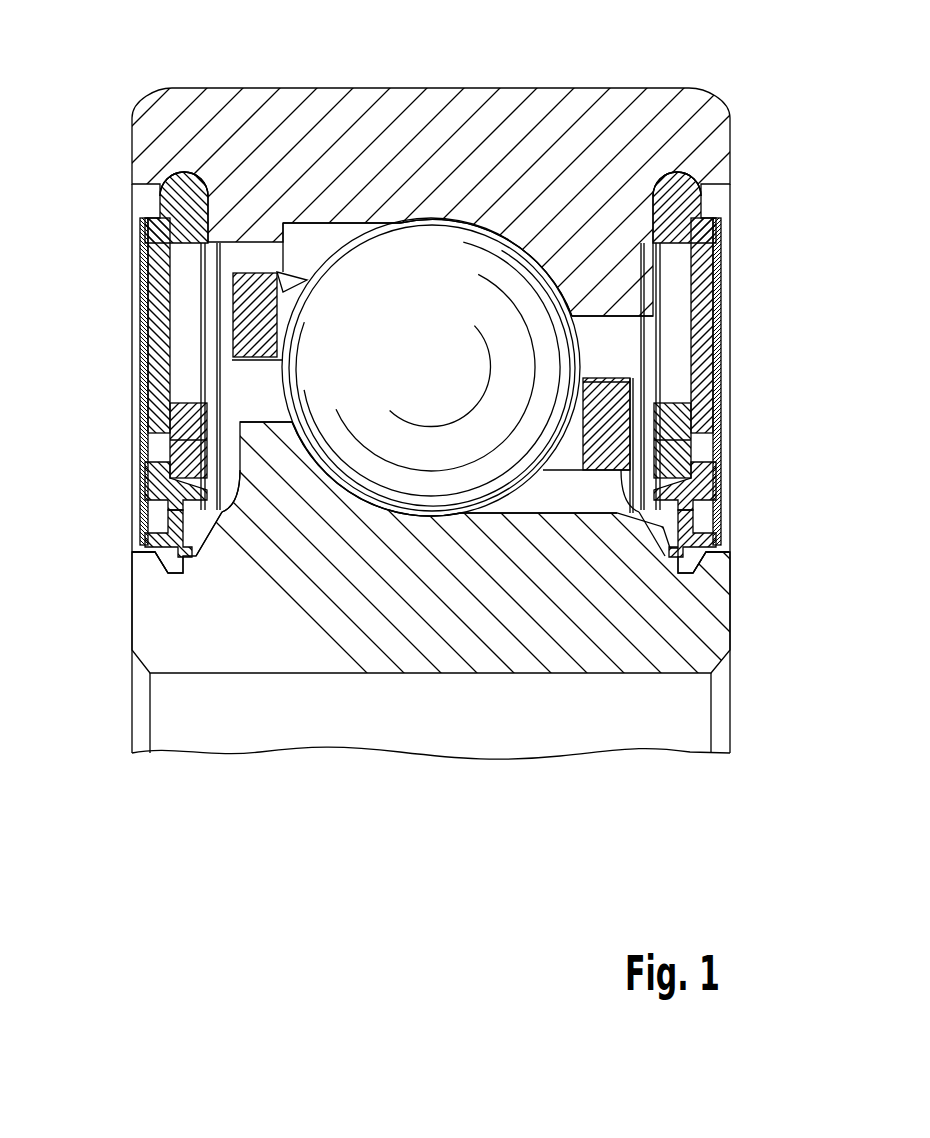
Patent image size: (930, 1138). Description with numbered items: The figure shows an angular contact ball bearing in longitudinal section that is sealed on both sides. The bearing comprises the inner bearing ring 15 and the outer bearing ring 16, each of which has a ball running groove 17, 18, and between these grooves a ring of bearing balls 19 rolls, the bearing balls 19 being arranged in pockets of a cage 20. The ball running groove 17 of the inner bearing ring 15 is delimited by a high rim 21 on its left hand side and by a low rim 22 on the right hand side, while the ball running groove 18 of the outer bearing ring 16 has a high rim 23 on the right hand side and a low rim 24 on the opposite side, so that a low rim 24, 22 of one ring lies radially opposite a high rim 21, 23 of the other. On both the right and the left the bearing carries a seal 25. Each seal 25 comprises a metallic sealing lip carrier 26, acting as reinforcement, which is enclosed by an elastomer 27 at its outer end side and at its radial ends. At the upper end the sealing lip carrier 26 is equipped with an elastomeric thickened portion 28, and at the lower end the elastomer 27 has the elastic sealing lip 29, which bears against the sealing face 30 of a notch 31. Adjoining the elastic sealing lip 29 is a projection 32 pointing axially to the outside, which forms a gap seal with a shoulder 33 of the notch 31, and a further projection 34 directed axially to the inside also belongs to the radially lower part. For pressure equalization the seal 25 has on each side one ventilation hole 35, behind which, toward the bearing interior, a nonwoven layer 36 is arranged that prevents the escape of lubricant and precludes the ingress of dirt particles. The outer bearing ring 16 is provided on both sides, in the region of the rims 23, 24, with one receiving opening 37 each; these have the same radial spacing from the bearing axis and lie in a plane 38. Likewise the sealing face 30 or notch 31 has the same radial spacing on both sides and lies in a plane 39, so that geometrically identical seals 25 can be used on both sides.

The inner bearing ring 15 is at (449, 655).
The outer bearing ring 16 is at (443, 108).
The ball running groove 17 is at (360, 512).
The ball running groove 18 is at (490, 228).
The bearing balls 19 is at (451, 378).
The cage 20 is at (607, 388).
The high rim 21 is at (288, 445).
The low rim 22 is at (532, 522).
The high rim 23 is at (598, 275).
The low rim 24 is at (372, 212).
The seal 25 is at (465, 366).
The sealing lip carrier 26 is at (146, 295).
The elastomer 27 is at (152, 260).
The elastomeric thickened portion 28 is at (155, 186).
The elastic sealing lip 29 is at (178, 602).
The sealing face 30 is at (433, 655).
The notch 31 is at (180, 572).
The projection 32 is at (165, 540).
The shoulder 33 is at (172, 562).
The projection 34 is at (150, 492).
The ventilation hole 35 is at (162, 448).
The nonwoven layer 36 is at (165, 412).
The receiving opening 37 is at (441, 98).
The plane 38 is at (188, 175).
The plane 39 is at (207, 560).